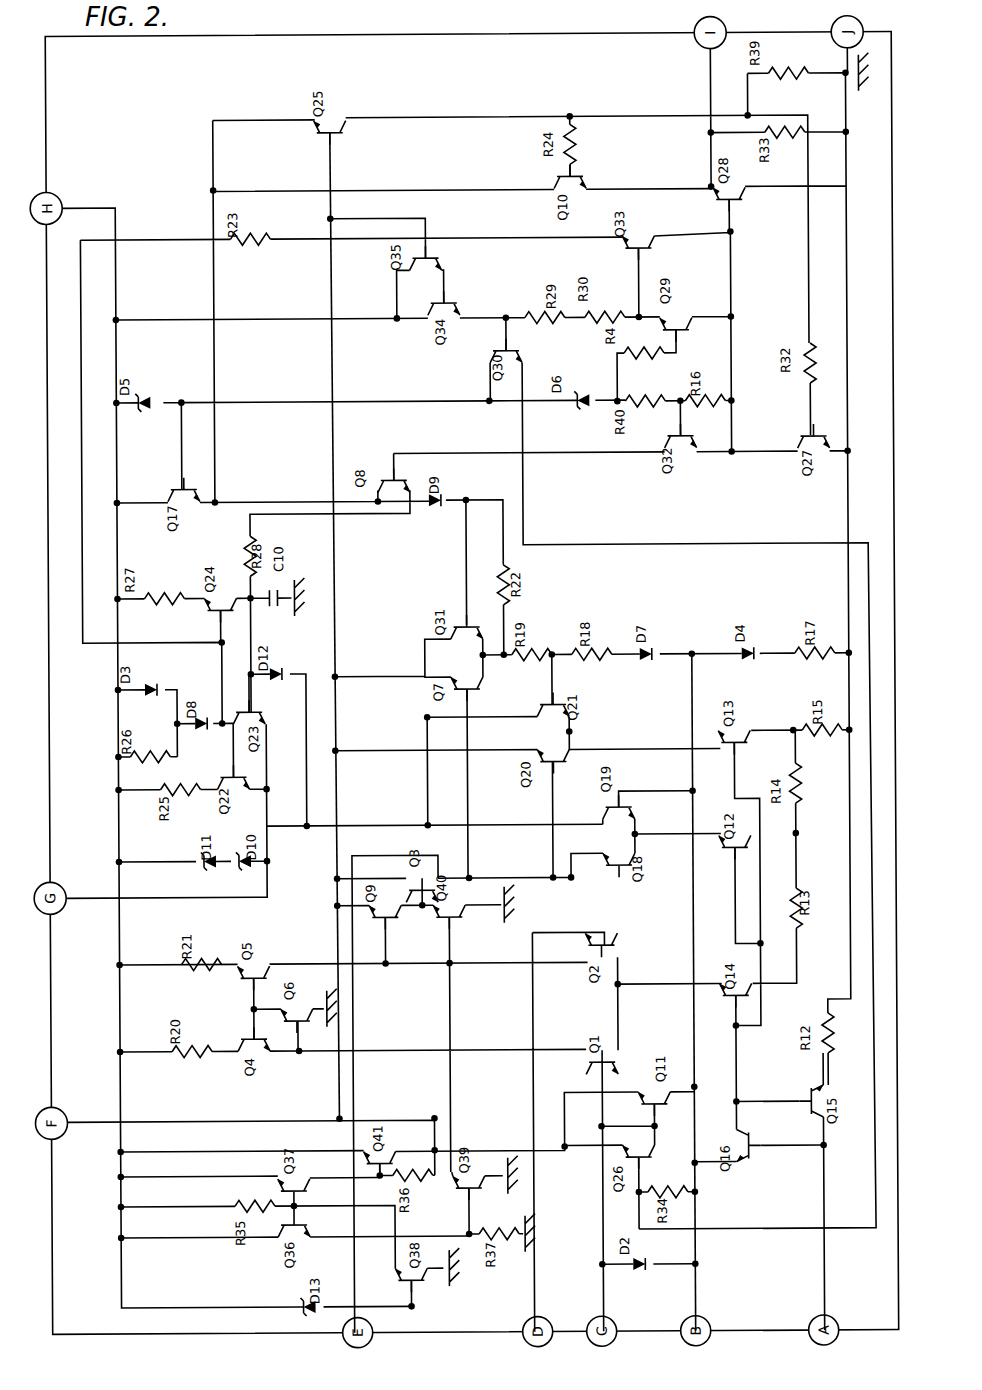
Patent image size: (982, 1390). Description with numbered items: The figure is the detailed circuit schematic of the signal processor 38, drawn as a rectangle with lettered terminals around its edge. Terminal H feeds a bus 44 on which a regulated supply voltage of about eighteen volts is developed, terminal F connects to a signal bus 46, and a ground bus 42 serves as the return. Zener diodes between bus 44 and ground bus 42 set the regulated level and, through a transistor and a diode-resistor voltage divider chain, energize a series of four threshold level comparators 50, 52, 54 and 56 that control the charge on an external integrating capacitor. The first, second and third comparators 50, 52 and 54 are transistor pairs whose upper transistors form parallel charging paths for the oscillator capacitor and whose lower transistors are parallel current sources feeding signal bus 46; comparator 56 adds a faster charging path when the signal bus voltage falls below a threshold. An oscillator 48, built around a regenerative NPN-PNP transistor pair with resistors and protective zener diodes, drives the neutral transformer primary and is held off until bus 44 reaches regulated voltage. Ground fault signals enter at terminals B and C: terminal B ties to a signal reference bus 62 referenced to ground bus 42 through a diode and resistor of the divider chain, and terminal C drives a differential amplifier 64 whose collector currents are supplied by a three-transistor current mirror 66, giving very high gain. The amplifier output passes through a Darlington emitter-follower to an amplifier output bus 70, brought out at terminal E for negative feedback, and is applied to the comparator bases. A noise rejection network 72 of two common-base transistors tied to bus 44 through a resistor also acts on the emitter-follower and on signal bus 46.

The signal processor 38 is at (472, 667).
The ground bus 42 is at (868, 556).
The regulated voltage bus 44 is at (123, 262).
The signal bus 46 is at (333, 468).
The oscillator 48 is at (148, 720).
The first threshold comparator 50 is at (618, 836).
The second threshold comparator 52 is at (553, 732).
The third threshold comparator 54 is at (410, 746).
The fourth threshold comparator 56 is at (640, 1086).
The signal reference bus 62 is at (700, 1045).
The differential amplifier 64 is at (591, 1003).
The current mirror 66 is at (240, 1023).
The amplifier output bus 70 is at (352, 1005).
The transistor network Q36/Q37/R35 72 is at (190, 1222).